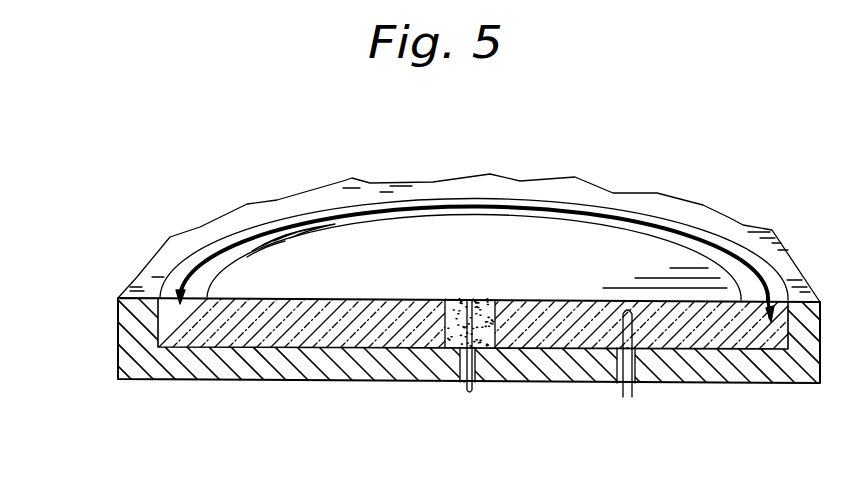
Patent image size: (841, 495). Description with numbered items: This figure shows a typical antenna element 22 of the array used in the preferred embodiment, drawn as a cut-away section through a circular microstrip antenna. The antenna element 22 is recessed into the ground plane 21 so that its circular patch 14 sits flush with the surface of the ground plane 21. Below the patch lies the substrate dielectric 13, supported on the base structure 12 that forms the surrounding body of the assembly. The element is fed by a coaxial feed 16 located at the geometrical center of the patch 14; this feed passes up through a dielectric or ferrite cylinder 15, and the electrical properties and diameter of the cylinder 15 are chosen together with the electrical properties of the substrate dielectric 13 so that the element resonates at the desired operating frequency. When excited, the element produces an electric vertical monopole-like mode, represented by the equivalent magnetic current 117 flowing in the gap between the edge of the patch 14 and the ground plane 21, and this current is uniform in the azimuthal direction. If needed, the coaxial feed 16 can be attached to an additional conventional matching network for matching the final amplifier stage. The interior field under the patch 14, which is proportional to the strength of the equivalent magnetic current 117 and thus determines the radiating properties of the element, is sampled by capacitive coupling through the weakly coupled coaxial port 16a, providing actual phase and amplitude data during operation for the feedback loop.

The base frame 12 is at (127, 340).
The substrate dielectric 13 is at (327, 337).
The circular patch 14 is at (378, 238).
The dielectric or ferrite cylinder 15 is at (452, 333).
The coaxial feed 16 is at (470, 390).
The weakly coupled coaxial port 16a is at (630, 388).
The ground plane 21 is at (703, 215).
The antenna element 22 is at (440, 173).
The equivalent magnetic current 117 is at (223, 243).